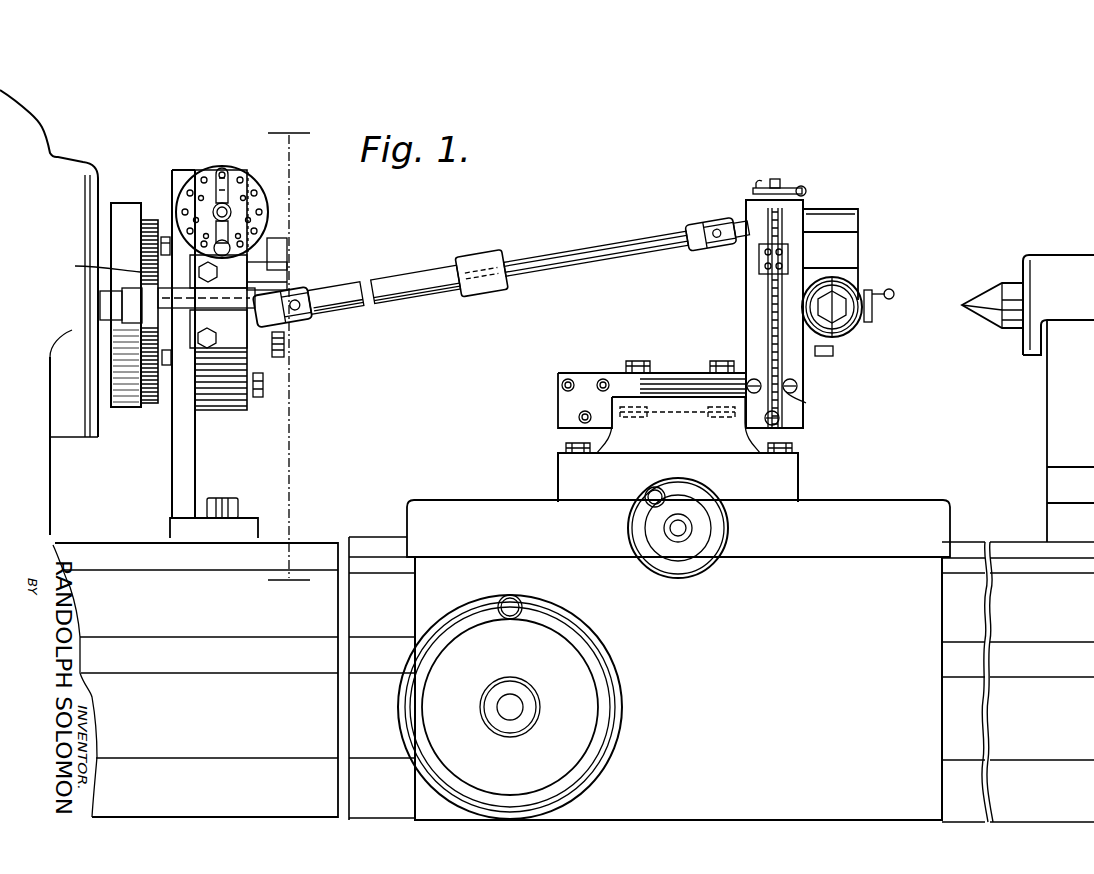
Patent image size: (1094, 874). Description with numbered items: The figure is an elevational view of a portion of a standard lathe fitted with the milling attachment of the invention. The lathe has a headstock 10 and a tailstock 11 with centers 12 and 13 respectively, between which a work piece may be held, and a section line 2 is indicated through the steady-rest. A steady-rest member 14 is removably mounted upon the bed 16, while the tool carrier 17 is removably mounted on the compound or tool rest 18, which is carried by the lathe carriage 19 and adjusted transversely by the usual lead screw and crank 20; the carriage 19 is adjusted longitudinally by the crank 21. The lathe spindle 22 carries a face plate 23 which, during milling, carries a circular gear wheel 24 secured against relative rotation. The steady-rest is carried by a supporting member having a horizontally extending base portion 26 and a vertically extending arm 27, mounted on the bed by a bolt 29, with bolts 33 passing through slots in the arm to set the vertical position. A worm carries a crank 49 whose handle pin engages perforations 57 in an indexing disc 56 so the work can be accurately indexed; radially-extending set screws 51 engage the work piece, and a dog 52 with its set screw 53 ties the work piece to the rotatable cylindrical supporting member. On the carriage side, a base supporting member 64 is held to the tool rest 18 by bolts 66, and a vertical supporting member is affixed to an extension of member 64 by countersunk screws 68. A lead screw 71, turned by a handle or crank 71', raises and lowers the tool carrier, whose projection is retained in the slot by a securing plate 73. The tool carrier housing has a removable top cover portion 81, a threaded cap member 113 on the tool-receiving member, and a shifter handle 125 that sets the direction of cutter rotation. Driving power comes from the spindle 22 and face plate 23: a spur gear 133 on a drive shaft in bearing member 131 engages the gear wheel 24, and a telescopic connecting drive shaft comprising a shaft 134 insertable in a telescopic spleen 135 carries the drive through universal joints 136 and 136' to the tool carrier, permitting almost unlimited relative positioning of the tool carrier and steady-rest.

The headstock 10 is at (49, 312).
The section line 2- 2 is at (289, 359).
The bed 16 is at (573, 679).
The lathe carriage 19 is at (678, 660).
The crank 21 is at (600, 708).
The lead screw and crank 20 is at (728, 532).
The compound or tool rest 18 is at (678, 472).
The base supporting member 64 is at (670, 392).
The bolts 66 is at (708, 366).
The lead screw 71 is at (758, 314).
The handle or crank 71' is at (779, 175).
The securing plate 73 is at (759, 262).
The tool carrier 17 is at (857, 204).
The removable top cover portion 81 is at (858, 222).
The threaded cap member 113 is at (842, 322).
The handle 125 is at (895, 293).
The countersunk bolts or screws 68 is at (807, 403).
The universal joint 136 is at (305, 318).
The telescopic spleen 135 is at (404, 270).
The shaft 134 is at (593, 236).
The universal joint 136' is at (713, 218).
The vertically extending arm 27 is at (172, 462).
The steady-rest member 14 is at (229, 425).
The horizontally extending base portion 26 is at (250, 518).
The bolt 29 is at (232, 492).
The indexing disc 56 is at (252, 178).
The perforations 57 is at (262, 213).
The crank 49 is at (222, 167).
The dog 52 is at (287, 262).
The bearing member 131 is at (281, 284).
The center 12 is at (206, 301).
The circular gear wheel 24 is at (140, 222).
The face plate 23 is at (123, 407).
The lathe spindle 22 is at (103, 300).
The spur gear 133 is at (89, 262).
The bolts 33 is at (165, 236).
The set screw 53 is at (285, 348).
The radially-extending set screws 51 is at (257, 397).
The tailstock 11 is at (1058, 398).
The center 13 is at (963, 308).